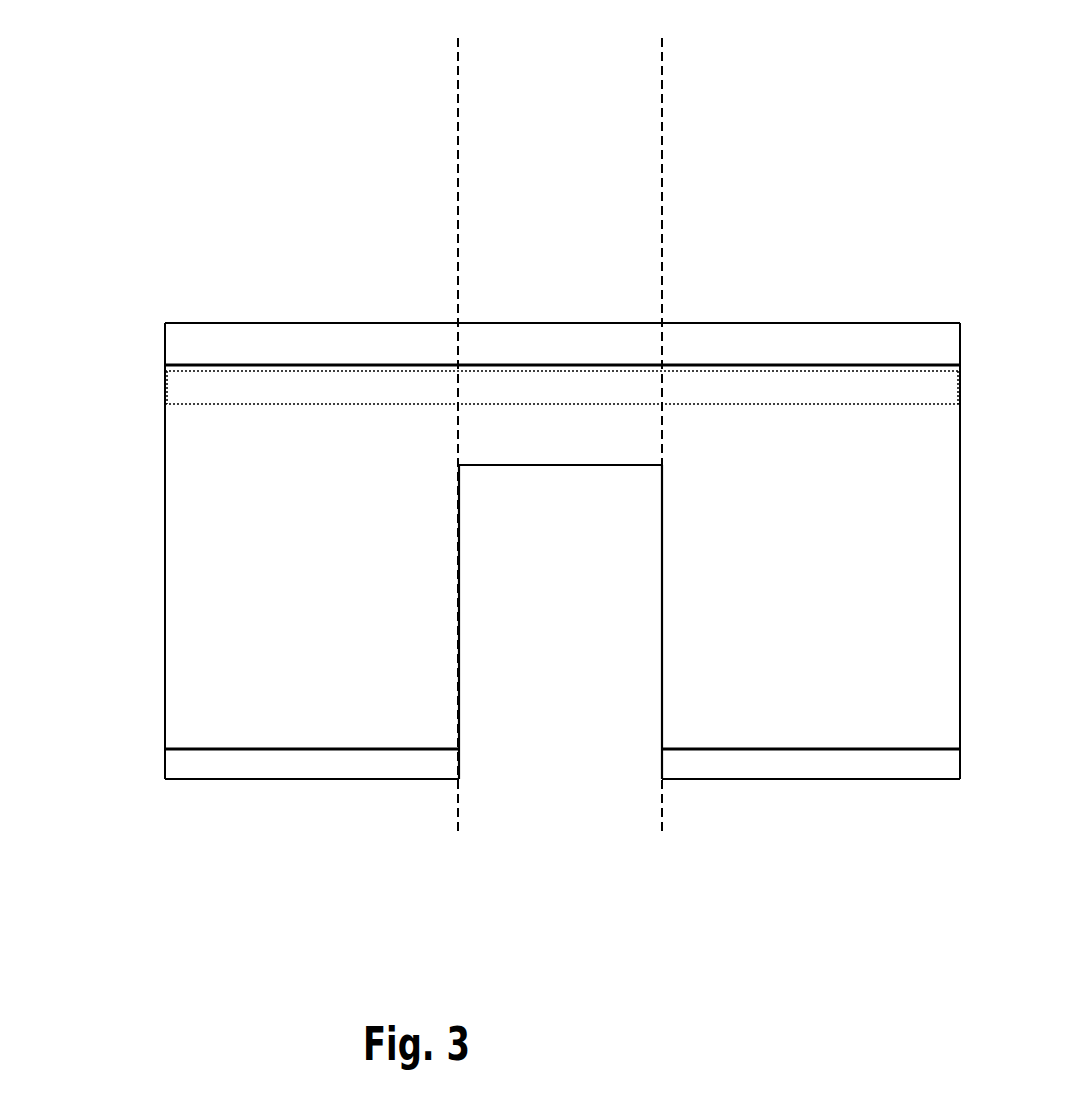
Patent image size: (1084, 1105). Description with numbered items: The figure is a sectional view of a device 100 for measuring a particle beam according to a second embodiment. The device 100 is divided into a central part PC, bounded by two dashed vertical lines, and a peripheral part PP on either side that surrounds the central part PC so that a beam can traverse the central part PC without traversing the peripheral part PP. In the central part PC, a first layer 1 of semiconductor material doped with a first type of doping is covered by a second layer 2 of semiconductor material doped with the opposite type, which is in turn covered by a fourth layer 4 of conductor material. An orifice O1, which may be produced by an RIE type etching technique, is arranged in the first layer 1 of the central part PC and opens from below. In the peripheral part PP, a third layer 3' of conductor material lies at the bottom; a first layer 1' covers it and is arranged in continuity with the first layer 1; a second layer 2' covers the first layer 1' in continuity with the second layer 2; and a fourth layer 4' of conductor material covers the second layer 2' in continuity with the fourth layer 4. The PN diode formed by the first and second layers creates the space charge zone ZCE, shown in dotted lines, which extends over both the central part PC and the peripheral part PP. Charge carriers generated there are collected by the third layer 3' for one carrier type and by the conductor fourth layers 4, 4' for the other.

The device for measuring a particle beam 100 is at (137, 33).
The first layer 1 is at (709, 503).
The first layer of the peripheral part 1' is at (250, 572).
The second layer 2 is at (760, 296).
The second layer of the peripheral part 2' is at (362, 296).
The third layer 3' is at (303, 843).
The fourth layer 4 is at (758, 282).
The fourth layer of the peripheral part 4' is at (362, 282).
The space charge zone ZCE is at (607, 390).
The orifice O1 is at (503, 795).
The peripheral part PP is at (546, 38).
The central part PC is at (560, 426).